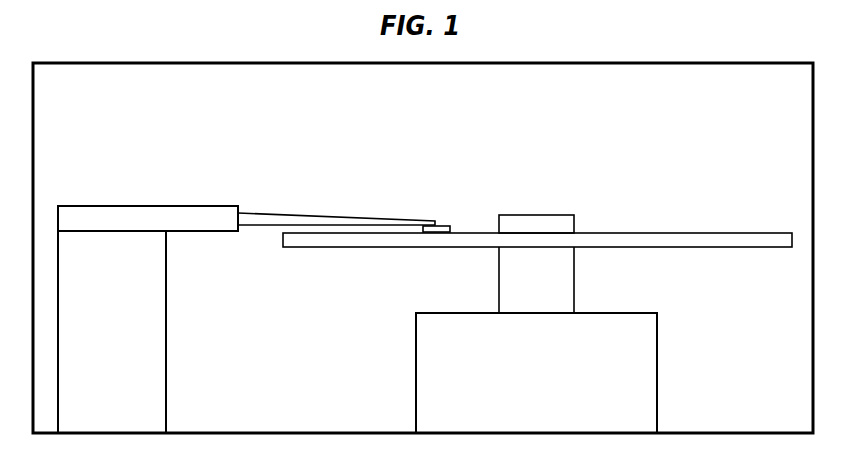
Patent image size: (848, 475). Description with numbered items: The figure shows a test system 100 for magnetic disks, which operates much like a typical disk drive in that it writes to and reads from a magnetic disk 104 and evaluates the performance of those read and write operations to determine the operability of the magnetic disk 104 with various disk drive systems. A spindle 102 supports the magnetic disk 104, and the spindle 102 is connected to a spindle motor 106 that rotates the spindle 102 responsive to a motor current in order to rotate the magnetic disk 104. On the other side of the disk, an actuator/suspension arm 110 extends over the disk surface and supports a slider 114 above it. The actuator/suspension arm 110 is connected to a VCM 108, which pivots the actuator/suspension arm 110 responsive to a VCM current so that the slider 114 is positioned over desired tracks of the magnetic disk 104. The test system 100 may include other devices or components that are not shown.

The test system 100 is at (423, 248).
The spindle 102 is at (558, 215).
The magnetic disk 104 is at (708, 233).
The spindle motor 106 is at (555, 405).
The VCM 108 is at (148, 319).
The actuator/suspension arm 110 is at (280, 212).
The slider 114 is at (444, 226).